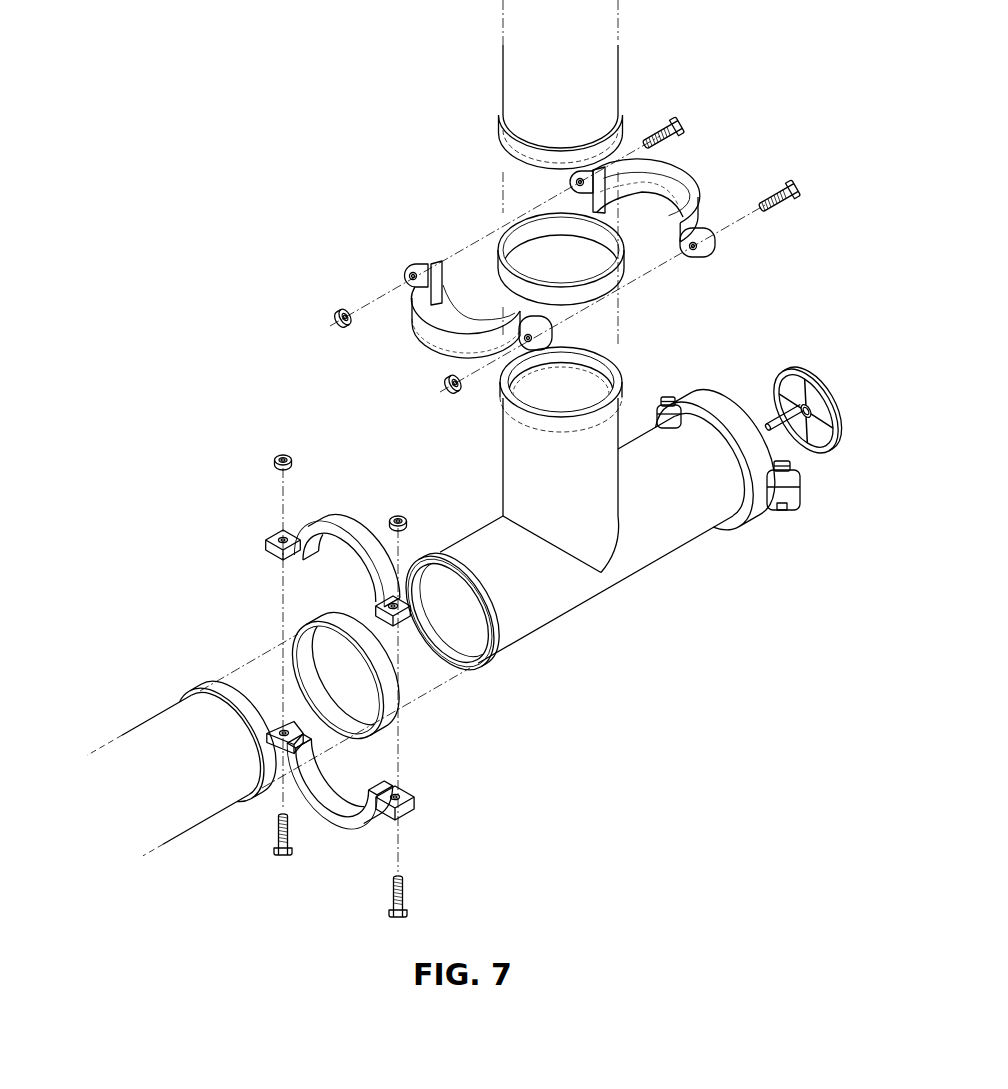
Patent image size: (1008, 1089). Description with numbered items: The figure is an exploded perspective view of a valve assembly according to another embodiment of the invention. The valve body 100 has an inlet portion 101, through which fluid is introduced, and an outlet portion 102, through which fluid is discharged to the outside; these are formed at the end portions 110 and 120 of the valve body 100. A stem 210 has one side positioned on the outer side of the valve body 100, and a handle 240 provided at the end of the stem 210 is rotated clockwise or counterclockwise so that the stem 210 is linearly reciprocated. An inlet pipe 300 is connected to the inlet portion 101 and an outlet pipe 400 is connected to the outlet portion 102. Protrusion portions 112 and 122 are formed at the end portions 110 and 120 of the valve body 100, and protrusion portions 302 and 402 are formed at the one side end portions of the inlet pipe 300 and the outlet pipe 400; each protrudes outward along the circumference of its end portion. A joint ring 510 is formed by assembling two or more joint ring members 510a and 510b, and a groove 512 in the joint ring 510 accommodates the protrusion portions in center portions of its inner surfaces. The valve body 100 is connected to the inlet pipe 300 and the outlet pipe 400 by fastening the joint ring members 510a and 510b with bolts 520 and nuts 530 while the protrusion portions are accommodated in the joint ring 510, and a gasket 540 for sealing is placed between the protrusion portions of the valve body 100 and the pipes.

The valve body 100 is at (593, 592).
The inlet portion 101 is at (457, 636).
The outlet portion 102 is at (572, 378).
The end portion 110 is at (503, 617).
The protrusion portion 112 is at (492, 661).
The end portion 120 is at (625, 418).
The protrusion portion 122 is at (512, 411).
The stem 210 is at (773, 385).
The handle 240 is at (792, 368).
The inlet pipe 300 is at (160, 728).
The protrusion portion 302 is at (222, 682).
The outlet pipe 400 is at (605, 52).
The protrusion portion 402 is at (497, 149).
The joint ring 510 is at (720, 392).
The joint ring member 510a is at (427, 331).
The joint ring member 510b is at (703, 197).
The groove 512 is at (442, 262).
The bolt 520 is at (793, 183).
The nut 530 is at (453, 388).
The gasket 540 is at (520, 214).